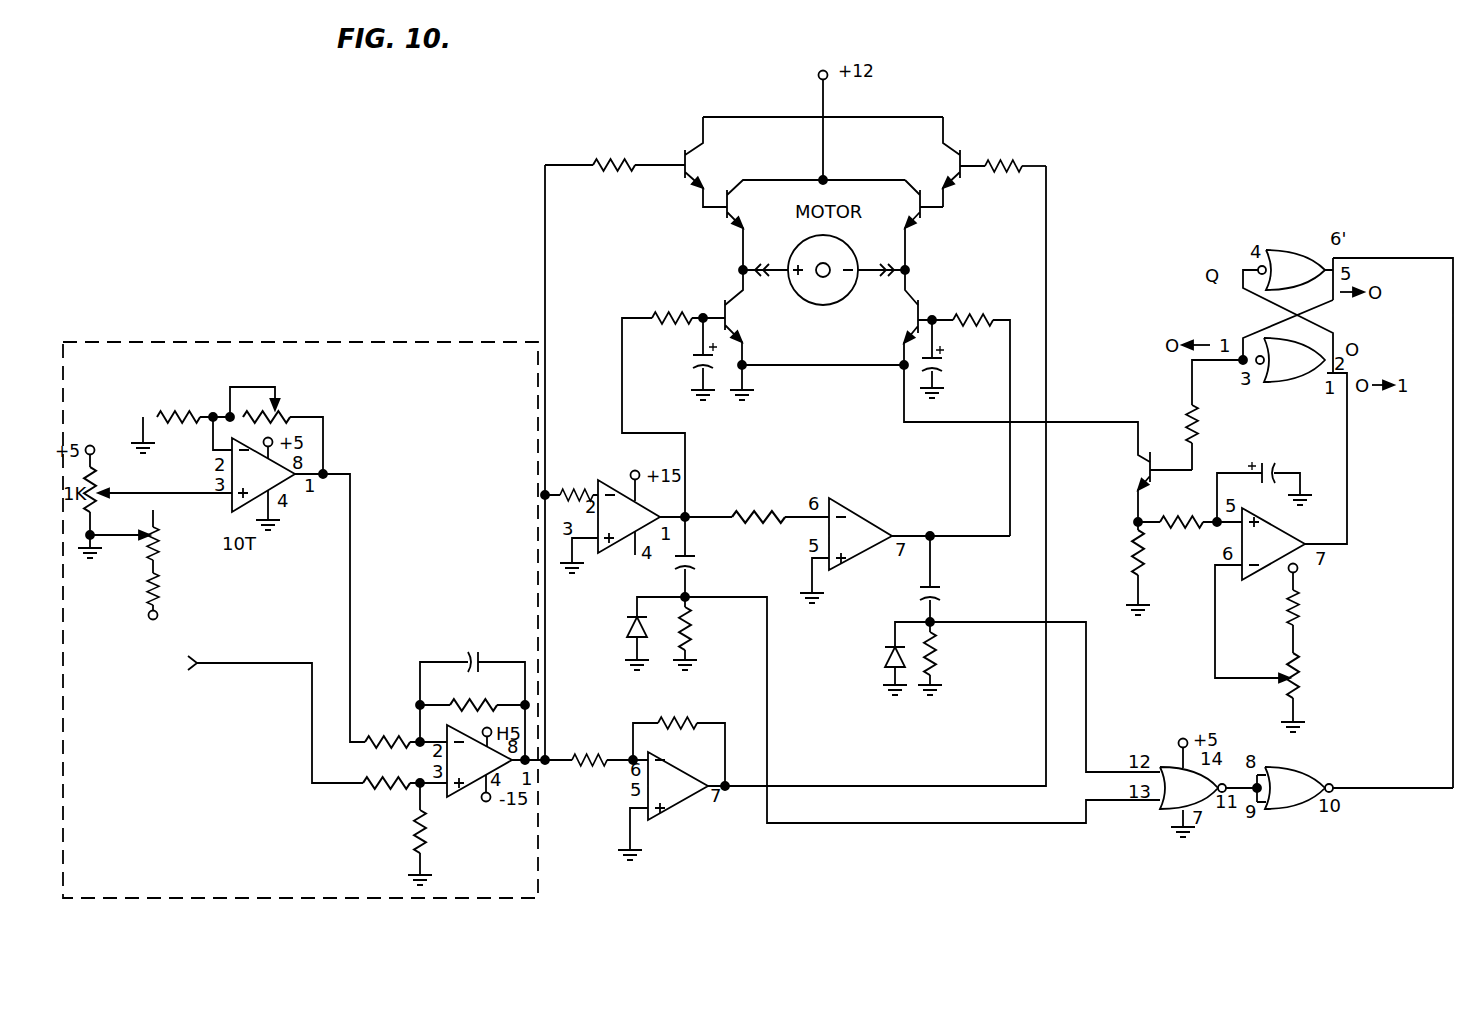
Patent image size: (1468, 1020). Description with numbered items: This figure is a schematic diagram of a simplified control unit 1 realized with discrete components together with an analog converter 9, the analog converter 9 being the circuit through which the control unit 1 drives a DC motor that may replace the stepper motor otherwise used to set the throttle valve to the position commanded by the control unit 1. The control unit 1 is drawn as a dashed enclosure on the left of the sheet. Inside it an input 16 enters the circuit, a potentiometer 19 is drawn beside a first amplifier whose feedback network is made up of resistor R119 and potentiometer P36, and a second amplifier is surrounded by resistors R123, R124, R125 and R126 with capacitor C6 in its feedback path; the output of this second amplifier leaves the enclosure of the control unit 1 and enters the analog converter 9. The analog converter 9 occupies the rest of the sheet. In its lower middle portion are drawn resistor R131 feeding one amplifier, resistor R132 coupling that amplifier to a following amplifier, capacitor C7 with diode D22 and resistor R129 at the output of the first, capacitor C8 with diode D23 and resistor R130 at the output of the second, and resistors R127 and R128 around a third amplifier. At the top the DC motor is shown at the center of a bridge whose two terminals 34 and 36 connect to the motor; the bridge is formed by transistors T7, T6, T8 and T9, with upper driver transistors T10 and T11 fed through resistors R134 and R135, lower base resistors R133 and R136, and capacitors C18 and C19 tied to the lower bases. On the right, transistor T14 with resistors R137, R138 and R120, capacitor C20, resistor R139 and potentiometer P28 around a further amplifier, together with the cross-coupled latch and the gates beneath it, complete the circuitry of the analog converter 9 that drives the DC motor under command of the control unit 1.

The control unit 1 is at (370, 342).
The analog converter 9 is at (1118, 193).
The input 0-5V 16 is at (253, 717).
The potentiometer 2K 19 is at (142, 563).
The motor terminal 34 is at (765, 257).
The motor terminal 36 is at (881, 257).
The resistor 10K R119 is at (180, 411).
The potentiometer 50K P36 is at (276, 415).
The resistor 3.9K R123 is at (403, 742).
The resistor 3.9K R124 is at (403, 805).
The resistor 470K R125 is at (448, 834).
The resistor 470K R126 is at (474, 716).
The capacitor 0.01uf C6 is at (480, 669).
The resistor 10K R131 is at (577, 473).
The resistor 10K R132 is at (780, 494).
The resistor 1K R133 is at (687, 317).
The capacitor 1uf C18 is at (684, 359).
The capacitor 0.05uf C7 is at (723, 557).
The diode IN914 D22 is at (622, 633).
The resistor 51K R129 is at (711, 633).
The resistor 11K R127 is at (610, 753).
The resistor 11K R128 is at (680, 736).
The transistor T10 is at (691, 162).
The resistor 1K R134 is at (598, 150).
The transistor T7 is at (815, 242).
The transistor T6 is at (814, 341).
The transistor T8 is at (908, 242).
The transistor T9 is at (908, 324).
The transistor T11 is at (944, 162).
The resistor 1K R135 is at (1014, 151).
The resistor 1K R136 is at (981, 409).
The capacitor 1uf C19 is at (953, 361).
The capacitor 0.05uf C8 is at (965, 579).
The diode IN914 D23 is at (880, 658).
The resistor 51K R130 is at (959, 658).
The transistor T14 is at (1142, 487).
The resistor 1K R137 is at (1218, 415).
The resistor 1.24 ohm R138 is at (1114, 568).
The resistor 100K R120 is at (1190, 500).
The capacitor 1uf C20 is at (1264, 471).
The resistor 82K R139 is at (1320, 609).
The potentiometer 5K P28 is at (1311, 691).